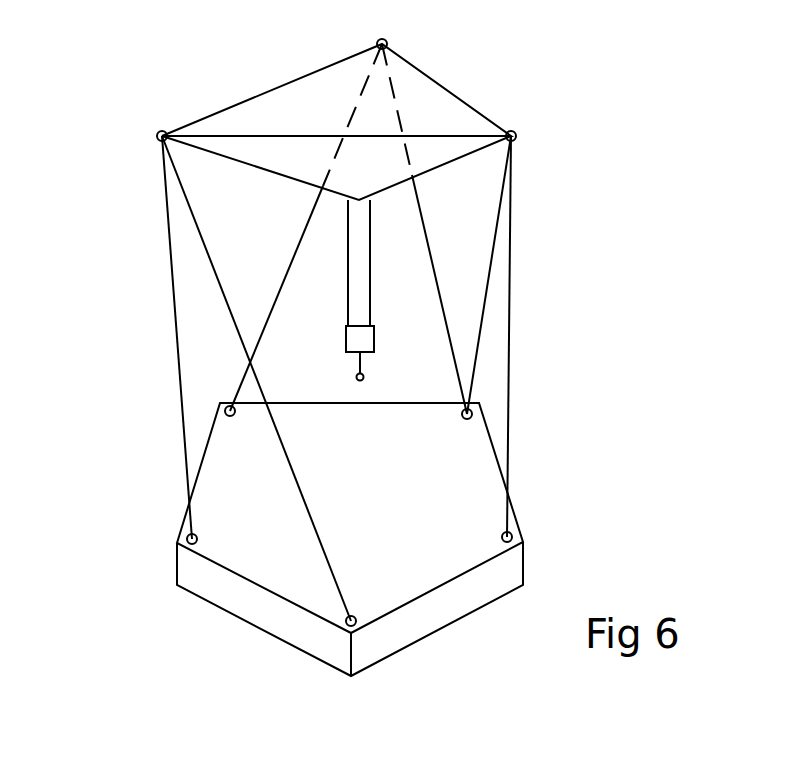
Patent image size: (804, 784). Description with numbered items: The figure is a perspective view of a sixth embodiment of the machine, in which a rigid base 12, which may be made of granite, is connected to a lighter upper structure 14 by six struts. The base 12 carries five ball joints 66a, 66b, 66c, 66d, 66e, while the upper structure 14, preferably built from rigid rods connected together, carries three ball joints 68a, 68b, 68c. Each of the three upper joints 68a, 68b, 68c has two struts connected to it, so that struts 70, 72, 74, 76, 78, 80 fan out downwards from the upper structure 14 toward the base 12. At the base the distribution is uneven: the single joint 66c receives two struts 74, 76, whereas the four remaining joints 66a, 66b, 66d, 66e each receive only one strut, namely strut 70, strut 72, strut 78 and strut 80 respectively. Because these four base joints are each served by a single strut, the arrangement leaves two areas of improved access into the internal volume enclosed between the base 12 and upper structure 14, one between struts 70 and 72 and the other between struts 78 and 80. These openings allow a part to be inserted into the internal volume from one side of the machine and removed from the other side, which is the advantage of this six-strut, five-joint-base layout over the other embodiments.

The base 12 is at (192, 580).
The upper structure 14 is at (285, 108).
The base joint 66a is at (197, 542).
The base joint 66b is at (233, 416).
The base joint 66c is at (467, 420).
The base joint 66d is at (502, 540).
The base joint 66e is at (346, 622).
The upper structure joint 68a is at (158, 134).
The upper structure joint 68b is at (388, 44).
The upper structure joint 68c is at (517, 137).
The strut 70 is at (178, 322).
The strut 72 is at (279, 292).
The strut 74 is at (443, 313).
The strut 76 is at (488, 282).
The strut 78 is at (512, 378).
The strut 80 is at (293, 471).